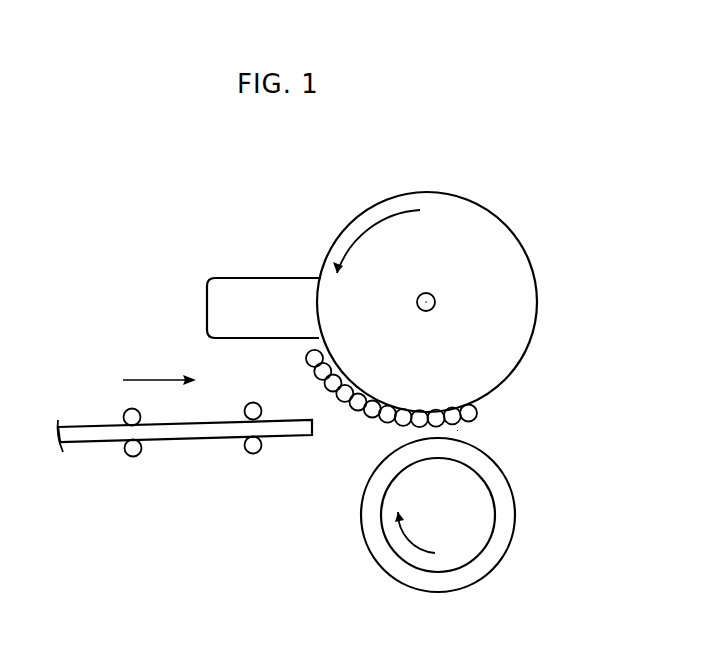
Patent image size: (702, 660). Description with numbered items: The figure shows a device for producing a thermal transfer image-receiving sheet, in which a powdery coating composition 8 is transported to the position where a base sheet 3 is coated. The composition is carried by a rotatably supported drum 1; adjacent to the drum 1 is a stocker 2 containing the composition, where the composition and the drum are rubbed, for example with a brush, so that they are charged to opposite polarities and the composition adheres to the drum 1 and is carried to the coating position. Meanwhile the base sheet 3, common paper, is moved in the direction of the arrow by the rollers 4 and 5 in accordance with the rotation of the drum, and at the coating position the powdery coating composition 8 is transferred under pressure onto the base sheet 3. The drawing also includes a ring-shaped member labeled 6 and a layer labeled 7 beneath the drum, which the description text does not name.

The drum 1 is at (513, 258).
The stocker 2 is at (210, 287).
The base sheet 3 is at (187, 432).
The rollers 4 is at (128, 410).
The rollers 5 is at (252, 405).
The developing roller 6 is at (515, 508).
The developer layer 7 is at (457, 430).
The powdery coating composition 8 is at (476, 408).